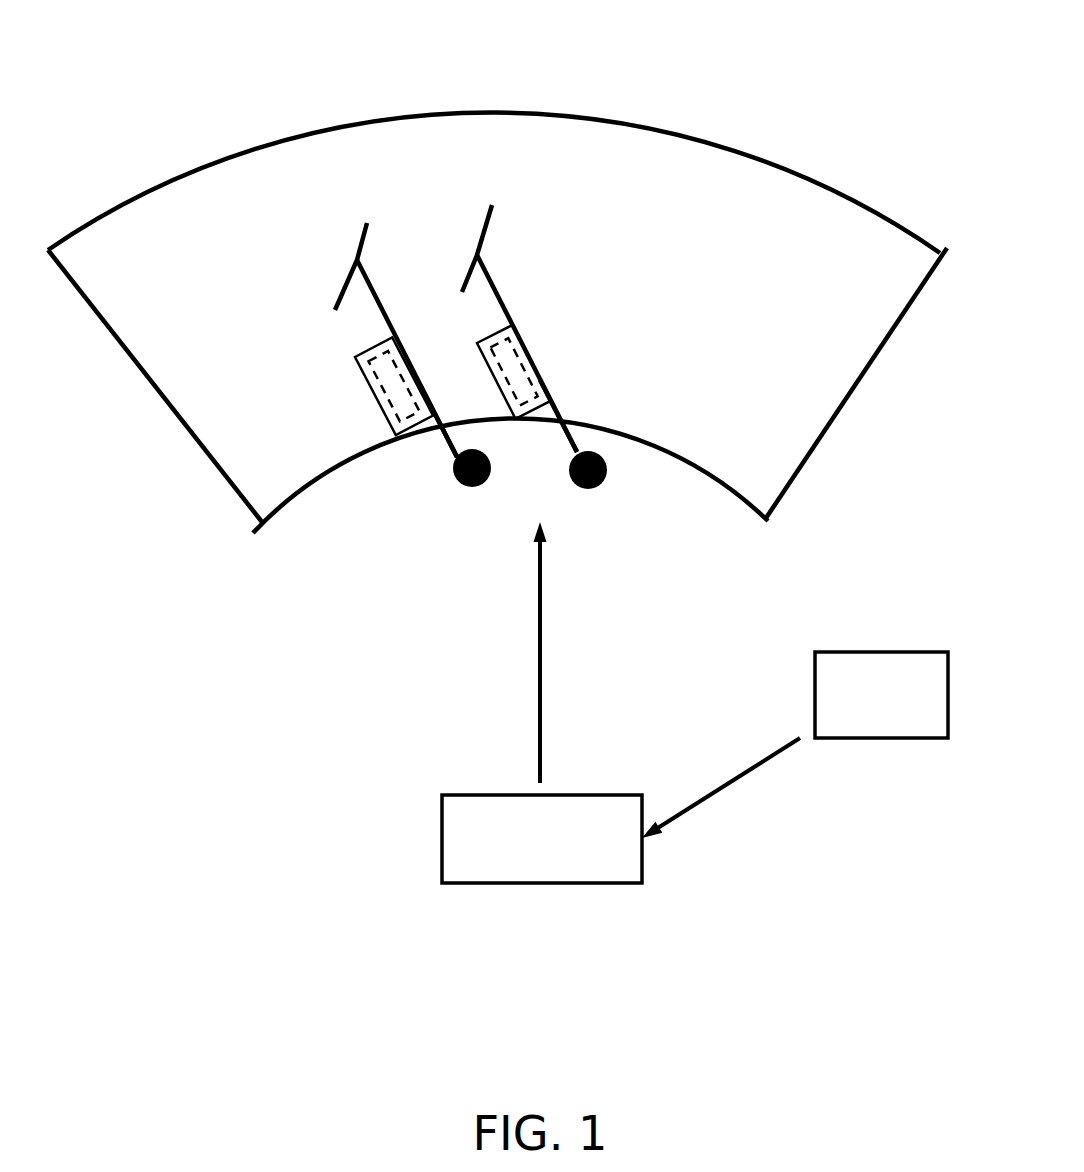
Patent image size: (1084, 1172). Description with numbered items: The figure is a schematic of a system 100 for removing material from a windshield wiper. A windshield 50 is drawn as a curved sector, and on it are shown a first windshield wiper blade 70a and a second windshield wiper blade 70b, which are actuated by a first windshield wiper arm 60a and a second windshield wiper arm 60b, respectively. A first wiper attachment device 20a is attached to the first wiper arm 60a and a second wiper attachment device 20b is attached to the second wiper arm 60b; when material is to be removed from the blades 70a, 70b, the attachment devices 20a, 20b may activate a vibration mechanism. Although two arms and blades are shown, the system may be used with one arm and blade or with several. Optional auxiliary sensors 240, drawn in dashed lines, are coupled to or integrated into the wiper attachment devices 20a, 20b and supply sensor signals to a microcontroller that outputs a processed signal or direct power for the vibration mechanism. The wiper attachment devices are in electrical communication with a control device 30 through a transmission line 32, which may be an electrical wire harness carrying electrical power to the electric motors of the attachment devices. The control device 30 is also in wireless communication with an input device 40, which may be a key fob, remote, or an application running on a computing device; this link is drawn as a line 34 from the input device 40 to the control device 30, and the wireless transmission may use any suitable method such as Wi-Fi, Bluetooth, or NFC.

The system for material removal from a wiper 100 is at (297, 97).
The windshield 50 is at (853, 294).
The first wiper attachment device 20a is at (397, 393).
The second wiper attachment device 20b is at (546, 401).
The first windshield wiper arm 60a is at (433, 449).
The second windshield wiper arm 60b is at (557, 364).
The first windshield wiper blade 70a is at (318, 312).
The second windshield wiper blade 70b is at (501, 223).
The auxiliary sensors 240 is at (477, 333).
The transmission line 32 is at (538, 632).
The control device 30 is at (560, 860).
The input device 40 is at (900, 715).
The connection arrow 34 is at (727, 783).